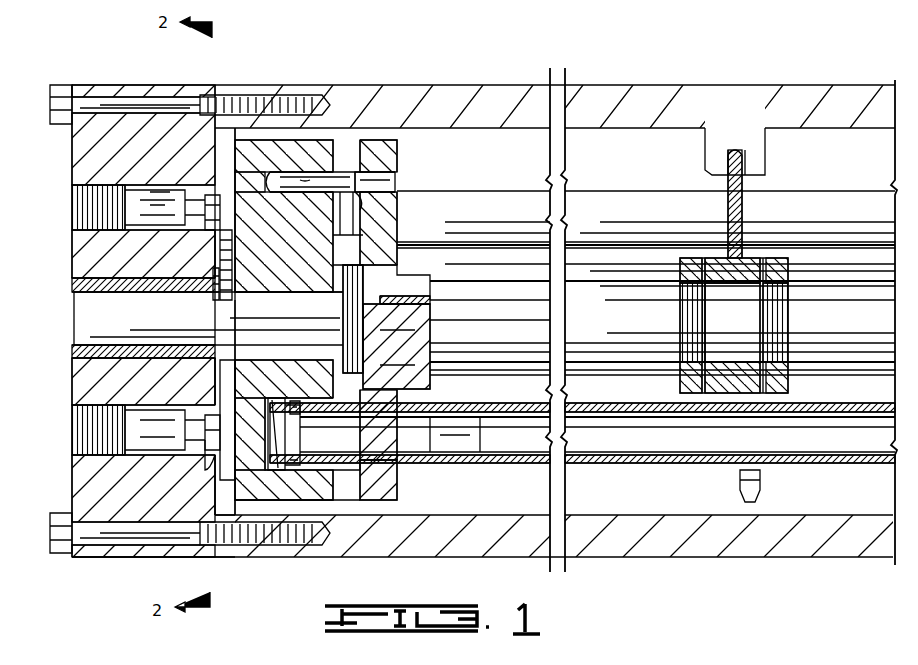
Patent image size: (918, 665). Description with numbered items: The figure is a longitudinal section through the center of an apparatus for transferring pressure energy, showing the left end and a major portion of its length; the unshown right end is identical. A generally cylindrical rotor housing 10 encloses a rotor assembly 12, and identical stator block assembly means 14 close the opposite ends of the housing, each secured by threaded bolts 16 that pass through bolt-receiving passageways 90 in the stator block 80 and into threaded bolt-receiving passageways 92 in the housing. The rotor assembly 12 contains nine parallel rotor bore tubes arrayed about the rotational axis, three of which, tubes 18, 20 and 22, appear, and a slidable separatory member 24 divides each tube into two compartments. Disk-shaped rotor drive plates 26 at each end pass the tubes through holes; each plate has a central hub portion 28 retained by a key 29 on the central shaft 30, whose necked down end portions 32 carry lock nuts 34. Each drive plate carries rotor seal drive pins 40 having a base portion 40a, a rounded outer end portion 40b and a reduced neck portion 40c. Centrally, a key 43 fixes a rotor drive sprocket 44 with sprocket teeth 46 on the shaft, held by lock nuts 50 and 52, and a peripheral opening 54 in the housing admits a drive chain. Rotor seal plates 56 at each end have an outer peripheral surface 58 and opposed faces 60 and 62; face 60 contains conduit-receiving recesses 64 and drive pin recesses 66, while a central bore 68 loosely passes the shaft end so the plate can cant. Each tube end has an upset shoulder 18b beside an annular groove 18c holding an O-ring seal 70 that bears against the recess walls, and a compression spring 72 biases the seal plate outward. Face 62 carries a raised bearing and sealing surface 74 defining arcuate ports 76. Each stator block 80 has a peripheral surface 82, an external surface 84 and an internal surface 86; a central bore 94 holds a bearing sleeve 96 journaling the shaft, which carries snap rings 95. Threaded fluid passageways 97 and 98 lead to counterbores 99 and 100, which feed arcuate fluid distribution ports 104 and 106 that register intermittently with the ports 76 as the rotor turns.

The rotor housing 10 is at (488, 82).
The rotor assembly 12 is at (598, 468).
The stator block assembly means 14 is at (140, 570).
The threaded bolts 16 is at (88, 100).
The rotor bore tube 18 is at (675, 468).
The upset shoulder 18b is at (298, 401).
The annular groove 18c is at (330, 416).
The rotor bore tube 20 is at (597, 368).
The rotor bore tube 22 is at (578, 191).
The separatory member 24 is at (458, 440).
The rotor drive plate 26 is at (398, 150).
The central hub portion 28 is at (425, 272).
The key 29 is at (430, 300).
The shaft 30 is at (80, 318).
The necked down end portion 32 is at (312, 315).
The lock nut 34 is at (430, 340).
The rotor seal drive pin 40 is at (345, 172).
The base portion 40a is at (397, 182).
The rounded outer end portion 40b is at (305, 180).
The neck portion 40c is at (395, 205).
The key 43 is at (736, 295).
The rotor drive sprocket 44 is at (750, 190).
The sprocket teeth 46 is at (736, 150).
The lock nut 50 is at (690, 258).
The lock nut 52 is at (778, 258).
The peripheral opening 54 is at (760, 128).
The rotor seal plate 56 is at (335, 500).
The outer peripheral surface 58 is at (275, 140).
The side face 60 is at (335, 478).
The side face 62 is at (228, 140).
The conduit-receiving recess 64 is at (312, 470).
The drive pin recess 66 is at (285, 195).
The central bore 68 is at (265, 290).
The O-ring seal 70 is at (305, 445).
The compression spring 72 is at (262, 460).
The bearing and sealing surface 74 is at (232, 258).
The port 76 is at (242, 420).
The stator block 80 is at (128, 138).
The peripheral surface 82 is at (130, 95).
The external surface 84 is at (72, 480).
The internal surface 86 is at (222, 520).
The bolt-receiving passageway 90 is at (76, 548).
The threaded bolt-receiving passageway 92 is at (262, 97).
The central bore 94 is at (130, 358).
The snap ring 95 is at (213, 297).
The bearing sleeve 96 is at (72, 285).
The fluid passageway 97 is at (155, 190).
The fluid passageway 98 is at (145, 455).
The counterbore 99 is at (210, 195).
The counterbore 100 is at (197, 450).
The fluid distribution port 104 is at (150, 212).
The fluid distribution port 106 is at (205, 410).